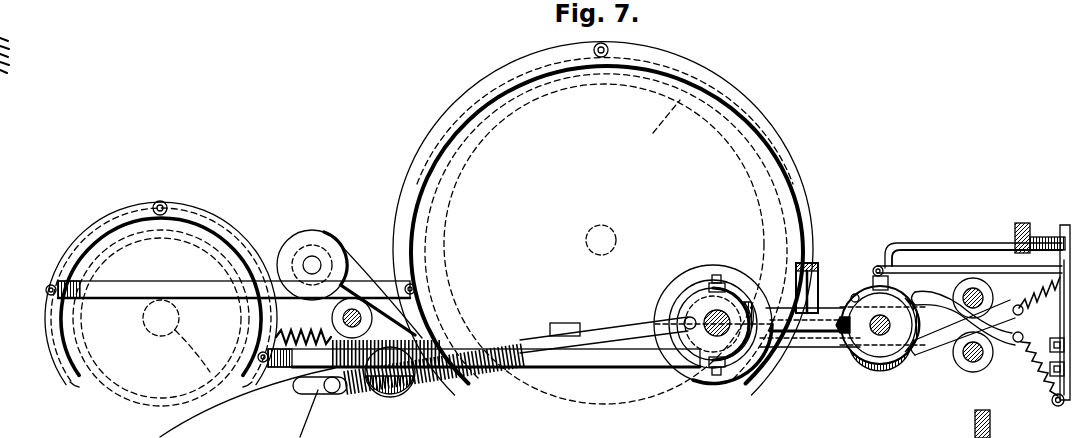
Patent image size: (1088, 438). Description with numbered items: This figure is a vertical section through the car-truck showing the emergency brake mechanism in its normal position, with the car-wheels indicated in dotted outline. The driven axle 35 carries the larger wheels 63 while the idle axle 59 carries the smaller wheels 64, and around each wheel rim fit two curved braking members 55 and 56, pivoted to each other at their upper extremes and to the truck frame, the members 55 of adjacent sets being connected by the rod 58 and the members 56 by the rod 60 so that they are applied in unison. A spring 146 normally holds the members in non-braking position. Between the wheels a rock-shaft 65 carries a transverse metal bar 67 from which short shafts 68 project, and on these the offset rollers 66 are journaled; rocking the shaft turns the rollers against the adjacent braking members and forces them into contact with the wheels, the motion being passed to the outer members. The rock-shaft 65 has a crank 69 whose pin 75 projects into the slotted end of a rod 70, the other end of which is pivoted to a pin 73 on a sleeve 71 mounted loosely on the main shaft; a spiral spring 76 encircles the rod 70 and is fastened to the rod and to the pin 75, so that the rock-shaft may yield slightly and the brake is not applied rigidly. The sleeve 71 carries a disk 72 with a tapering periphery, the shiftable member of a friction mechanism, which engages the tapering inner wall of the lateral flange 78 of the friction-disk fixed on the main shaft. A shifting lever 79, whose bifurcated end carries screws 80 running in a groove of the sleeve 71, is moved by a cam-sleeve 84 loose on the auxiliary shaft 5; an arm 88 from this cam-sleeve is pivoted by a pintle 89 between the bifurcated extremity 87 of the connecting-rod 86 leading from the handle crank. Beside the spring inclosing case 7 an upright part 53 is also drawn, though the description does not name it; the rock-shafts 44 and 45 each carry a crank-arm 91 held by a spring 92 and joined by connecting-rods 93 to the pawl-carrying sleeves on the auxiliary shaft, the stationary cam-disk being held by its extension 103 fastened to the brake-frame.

The auxiliary shaft 5 is at (877, 318).
The inclosing case 7 is at (822, 313).
The driven axle 35 is at (573, 258).
The rock-shaft 44 is at (970, 290).
The rock-shaft 45 is at (1000, 330).
The post 53 is at (812, 260).
The curved braking member 55 is at (47, 327).
The curved braking member 56 is at (760, 130).
The rod 58 is at (120, 290).
The idle axle 59 is at (210, 372).
The rod 60 is at (558, 360).
The wheels 63 is at (680, 100).
The wheels 64 is at (173, 257).
The rock-shaft 65 is at (354, 308).
The offset rollers 66 is at (316, 236).
The metal bar 67 is at (330, 257).
The short shafts 68 is at (312, 258).
The crank 69 is at (305, 392).
The rod 70 is at (588, 365).
The sleeve 71 is at (698, 305).
The disk 72 is at (730, 280).
The pin 73 is at (673, 308).
The pin 75 is at (245, 403).
The spiral spring 76 is at (503, 347).
The lateral flange 78 is at (678, 280).
The shifting lever 79 is at (788, 320).
The screws 80 is at (716, 275).
The cam-sleeve 84 is at (890, 357).
The connecting-rod 86 is at (933, 270).
The bifurcated extremity 87 is at (872, 266).
The arm 88 is at (835, 348).
The pintle 89 is at (880, 265).
The crank-arm 91 is at (1000, 272).
The spring 92 is at (1024, 316).
The connecting-rods 93 is at (925, 296).
The extension 103 is at (983, 247).
The spring 146 is at (272, 334).